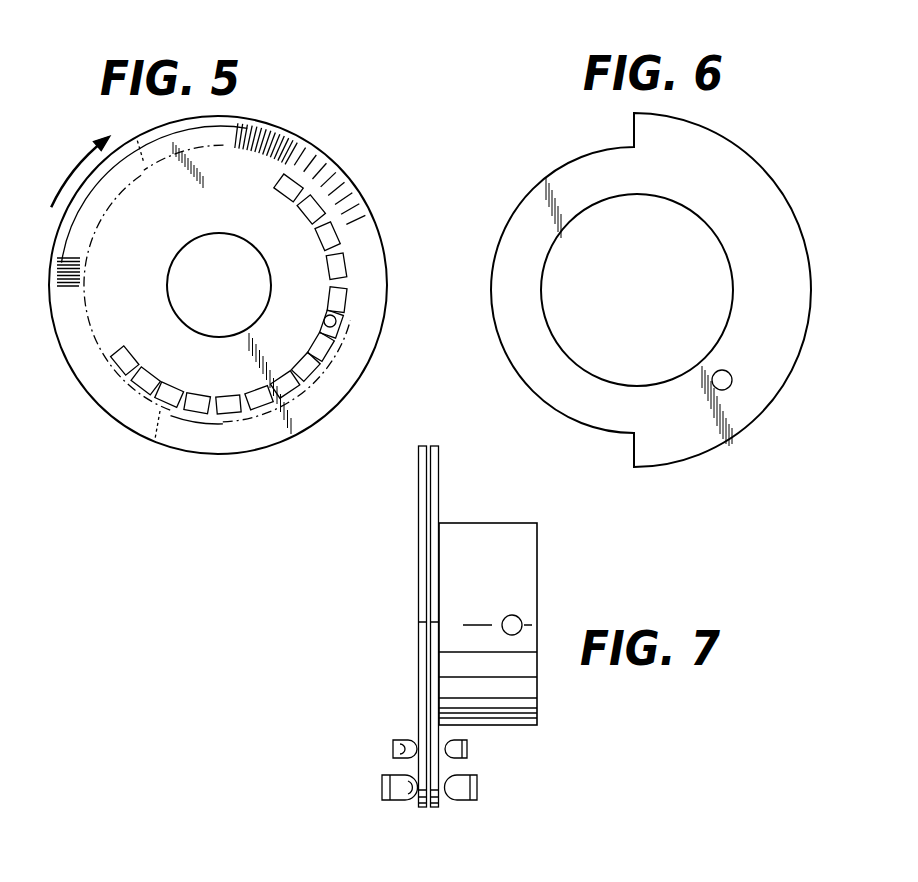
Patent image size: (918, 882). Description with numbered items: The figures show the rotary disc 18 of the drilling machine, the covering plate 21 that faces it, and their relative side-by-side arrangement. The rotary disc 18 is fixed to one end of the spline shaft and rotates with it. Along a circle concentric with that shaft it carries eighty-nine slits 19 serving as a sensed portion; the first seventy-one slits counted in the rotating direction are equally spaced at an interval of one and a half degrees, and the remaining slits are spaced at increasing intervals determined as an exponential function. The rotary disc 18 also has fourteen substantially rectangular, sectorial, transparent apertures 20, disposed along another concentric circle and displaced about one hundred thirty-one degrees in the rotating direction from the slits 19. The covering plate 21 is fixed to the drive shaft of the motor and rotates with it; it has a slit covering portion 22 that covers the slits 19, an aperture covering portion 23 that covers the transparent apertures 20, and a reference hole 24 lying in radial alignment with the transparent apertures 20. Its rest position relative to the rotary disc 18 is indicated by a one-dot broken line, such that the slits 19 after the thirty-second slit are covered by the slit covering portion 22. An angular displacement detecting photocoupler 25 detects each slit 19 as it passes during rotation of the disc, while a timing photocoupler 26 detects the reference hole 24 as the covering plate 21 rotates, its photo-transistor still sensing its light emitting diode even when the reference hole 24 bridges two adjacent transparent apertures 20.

In FIG. 5, the rotary disc 18 is at (360, 160).
In FIG. 7, the rotary disc 18 is at (419, 575).
In FIG. 5, the slits 19 is at (290, 147).
In FIG. 5, the transparent apertures 20 is at (312, 215).
In FIG. 5, the covering plate 21 is at (150, 440).
In FIG. 6, the covering plate 21 is at (794, 180).
In FIG. 7, the covering plate 21 is at (537, 582).
In FIG. 6, the slit covering portion 22 is at (640, 125).
In FIG. 6, the aperture covering portion 23 is at (524, 392).
In FIG. 5, the reference hole 24 is at (350, 322).
In FIG. 6, the reference hole 24 is at (729, 372).
In FIG. 7, the angular displacement detecting photocoupler 25 is at (383, 786).
In FIG. 7, the timing photocoupler 26 is at (395, 748).